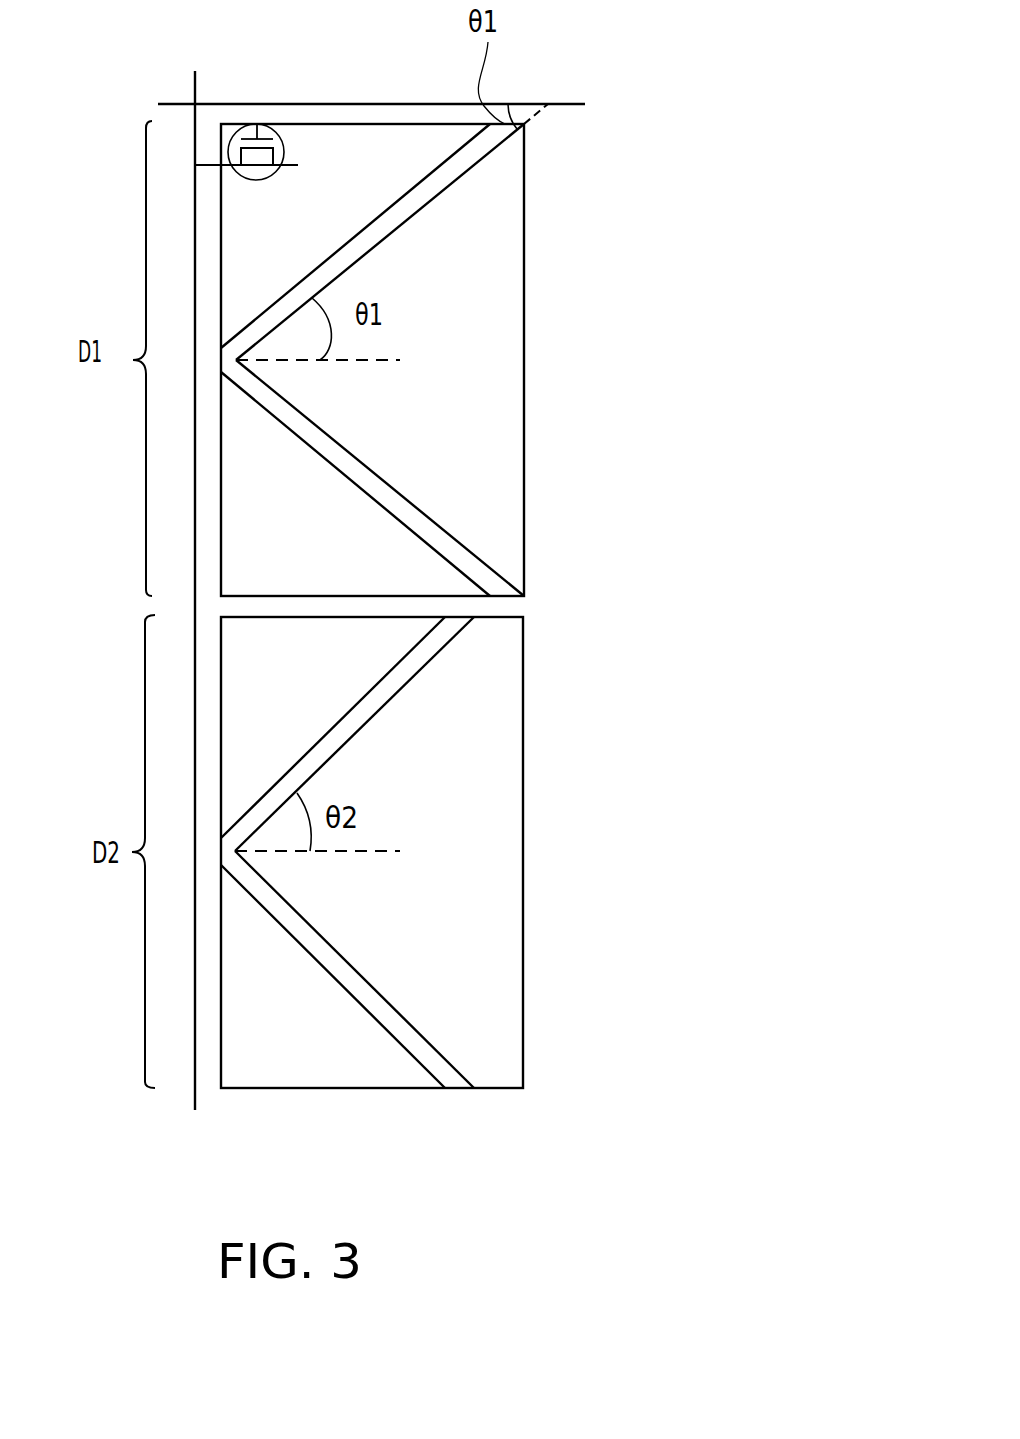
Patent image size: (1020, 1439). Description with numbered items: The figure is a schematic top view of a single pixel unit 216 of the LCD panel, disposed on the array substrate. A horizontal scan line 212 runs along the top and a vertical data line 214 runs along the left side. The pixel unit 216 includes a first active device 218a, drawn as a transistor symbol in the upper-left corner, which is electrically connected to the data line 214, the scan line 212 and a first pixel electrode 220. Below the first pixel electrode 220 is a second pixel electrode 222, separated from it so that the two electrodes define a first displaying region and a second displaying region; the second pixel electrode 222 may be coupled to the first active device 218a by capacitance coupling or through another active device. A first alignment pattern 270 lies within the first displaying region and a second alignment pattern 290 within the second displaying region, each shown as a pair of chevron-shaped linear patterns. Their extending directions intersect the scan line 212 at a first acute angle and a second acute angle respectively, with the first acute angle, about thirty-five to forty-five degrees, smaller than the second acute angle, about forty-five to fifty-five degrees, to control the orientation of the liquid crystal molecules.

The scan line 212 is at (532, 103).
The data line 214 is at (193, 1030).
The pixel unit 216 is at (672, 1243).
The first active device 218a is at (283, 154).
The first pixel electrode 220 is at (513, 207).
The second pixel electrode 222 is at (468, 783).
The first alignment pattern 270 is at (477, 555).
The second alignment pattern 290 is at (423, 642).